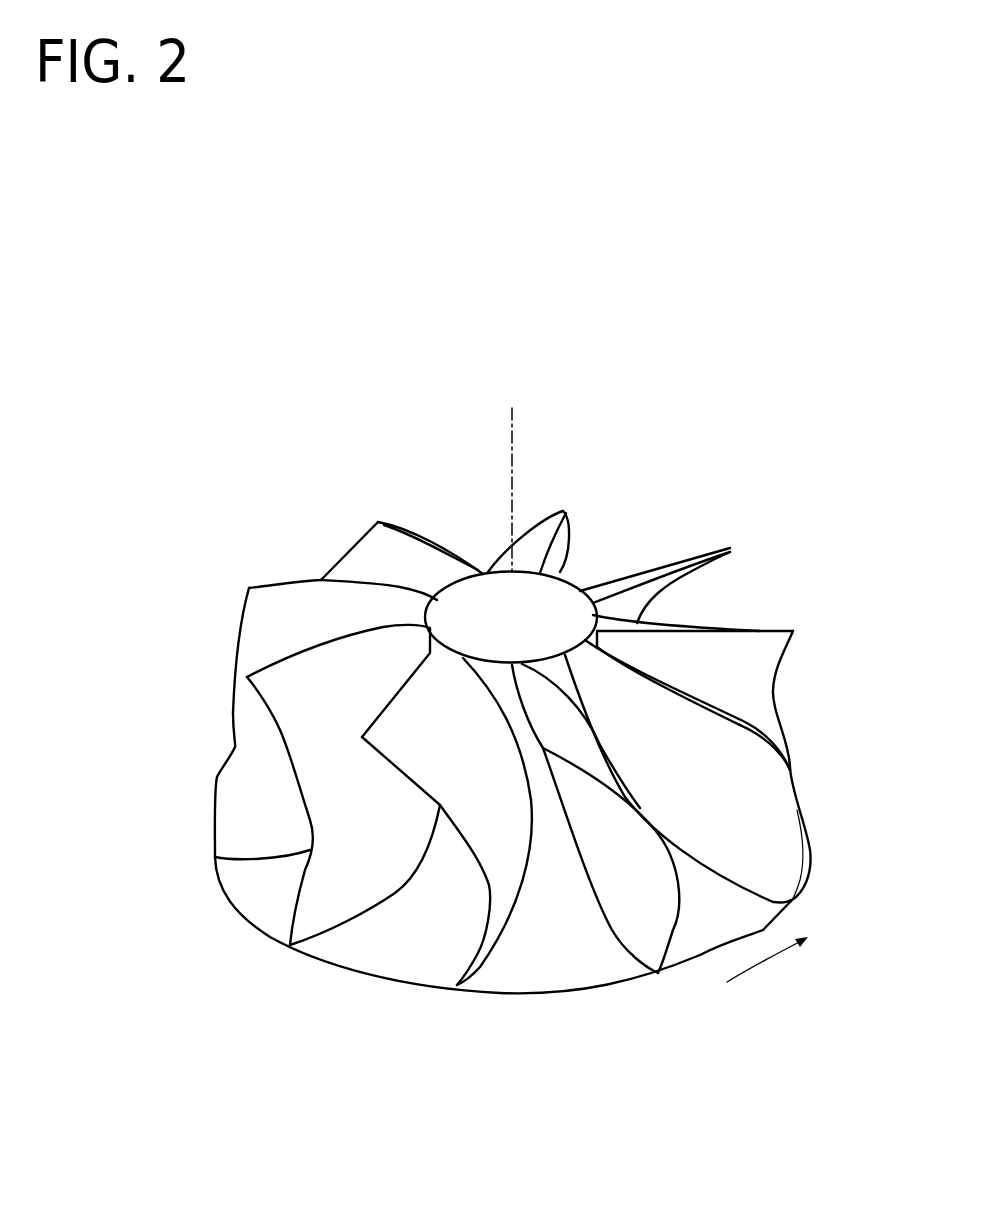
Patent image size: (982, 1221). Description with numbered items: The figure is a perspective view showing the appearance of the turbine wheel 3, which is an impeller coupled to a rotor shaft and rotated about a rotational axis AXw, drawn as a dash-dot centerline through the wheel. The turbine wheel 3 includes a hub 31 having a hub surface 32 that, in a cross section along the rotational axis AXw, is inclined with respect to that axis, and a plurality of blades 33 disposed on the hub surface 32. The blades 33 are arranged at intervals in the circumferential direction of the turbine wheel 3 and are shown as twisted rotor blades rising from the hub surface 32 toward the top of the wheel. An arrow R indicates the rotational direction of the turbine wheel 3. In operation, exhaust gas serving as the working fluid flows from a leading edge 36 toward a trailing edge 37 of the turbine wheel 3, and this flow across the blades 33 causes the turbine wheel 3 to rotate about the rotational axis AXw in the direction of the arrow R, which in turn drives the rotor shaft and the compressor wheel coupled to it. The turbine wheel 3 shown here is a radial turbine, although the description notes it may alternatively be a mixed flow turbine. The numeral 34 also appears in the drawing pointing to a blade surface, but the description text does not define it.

The turbine wheel 3 is at (678, 437).
The hub 31 is at (780, 925).
The hub surface 32 is at (705, 916).
The blades 33 is at (645, 595).
The pressure surface of blade 34 is at (286, 762).
The leading edge 36 is at (295, 892).
The trailing edge 37 is at (282, 658).
The rotational axis AXw is at (512, 446).
The arrow indicating rotational direction R is at (778, 957).